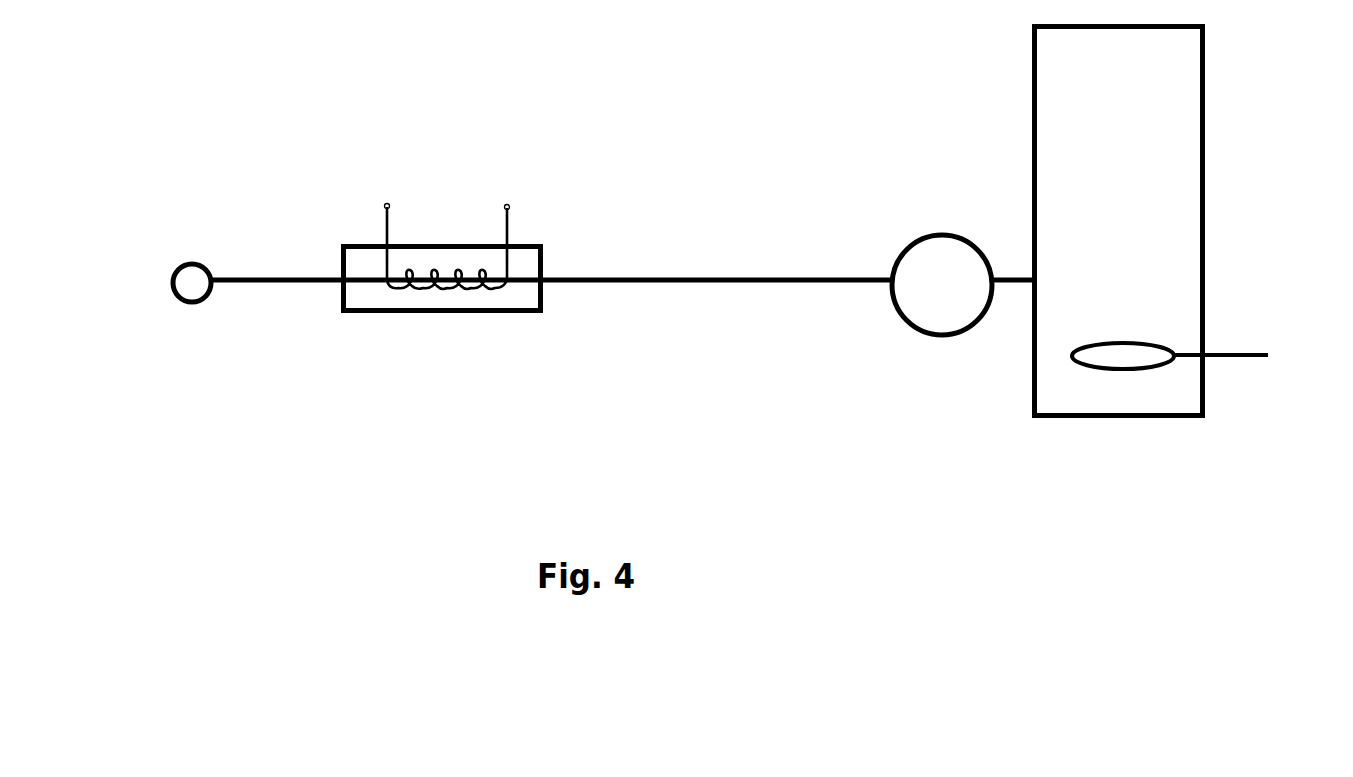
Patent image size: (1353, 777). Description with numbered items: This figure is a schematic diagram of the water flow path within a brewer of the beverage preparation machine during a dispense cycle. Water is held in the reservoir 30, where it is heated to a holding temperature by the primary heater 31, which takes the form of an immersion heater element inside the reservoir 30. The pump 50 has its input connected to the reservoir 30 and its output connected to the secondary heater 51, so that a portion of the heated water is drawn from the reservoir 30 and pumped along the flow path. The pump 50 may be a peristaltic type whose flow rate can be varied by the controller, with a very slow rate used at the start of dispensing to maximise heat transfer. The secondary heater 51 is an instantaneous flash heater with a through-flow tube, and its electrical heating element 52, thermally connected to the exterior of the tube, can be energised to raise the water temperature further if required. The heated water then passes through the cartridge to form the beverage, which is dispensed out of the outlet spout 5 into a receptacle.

The outlet spout 5 is at (183, 286).
The secondary heater 51 is at (462, 317).
The electrical heating element 52 is at (507, 206).
The pump 50 is at (937, 320).
The reservoir 30 is at (1027, 465).
The primary heater 31 is at (1253, 360).